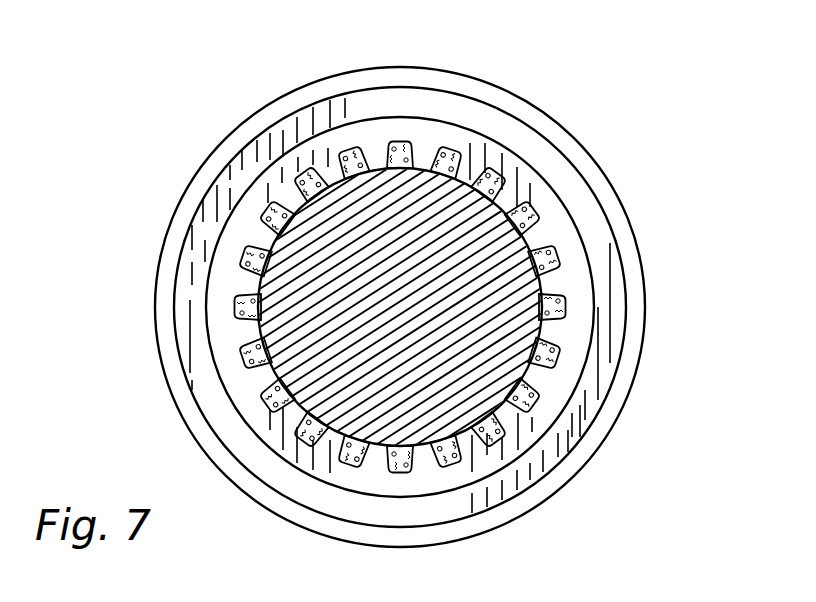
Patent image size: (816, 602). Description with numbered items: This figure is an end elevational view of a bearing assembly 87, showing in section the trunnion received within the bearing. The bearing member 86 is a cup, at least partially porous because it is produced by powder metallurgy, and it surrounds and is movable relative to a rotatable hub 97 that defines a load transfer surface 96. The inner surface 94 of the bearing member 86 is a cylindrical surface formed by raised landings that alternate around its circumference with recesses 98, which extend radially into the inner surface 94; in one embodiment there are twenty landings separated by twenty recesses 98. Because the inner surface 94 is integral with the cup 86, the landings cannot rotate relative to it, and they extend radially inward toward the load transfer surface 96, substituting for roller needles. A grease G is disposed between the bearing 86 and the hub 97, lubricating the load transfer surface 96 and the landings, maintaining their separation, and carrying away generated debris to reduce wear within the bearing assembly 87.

The bearing member 86 is at (554, 509).
The bearing assembly 87 is at (184, 102).
The inner surface 94 is at (545, 288).
The load transfer surface 96 is at (534, 217).
The rotatable hub 97 is at (432, 330).
The recesses 98 is at (567, 308).
The grease G is at (465, 160).